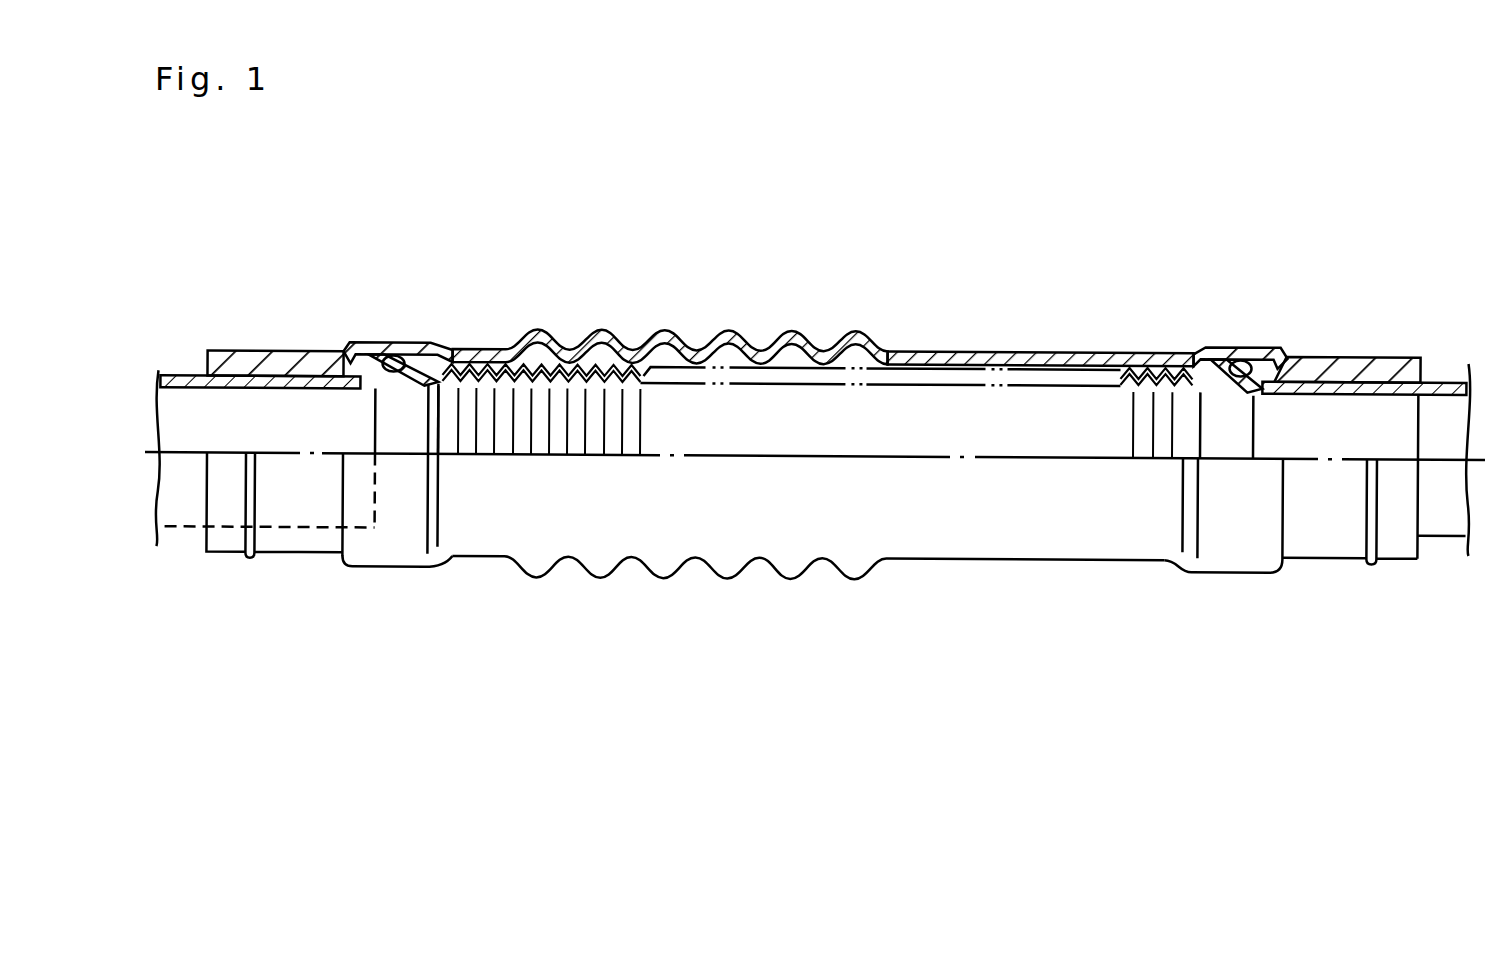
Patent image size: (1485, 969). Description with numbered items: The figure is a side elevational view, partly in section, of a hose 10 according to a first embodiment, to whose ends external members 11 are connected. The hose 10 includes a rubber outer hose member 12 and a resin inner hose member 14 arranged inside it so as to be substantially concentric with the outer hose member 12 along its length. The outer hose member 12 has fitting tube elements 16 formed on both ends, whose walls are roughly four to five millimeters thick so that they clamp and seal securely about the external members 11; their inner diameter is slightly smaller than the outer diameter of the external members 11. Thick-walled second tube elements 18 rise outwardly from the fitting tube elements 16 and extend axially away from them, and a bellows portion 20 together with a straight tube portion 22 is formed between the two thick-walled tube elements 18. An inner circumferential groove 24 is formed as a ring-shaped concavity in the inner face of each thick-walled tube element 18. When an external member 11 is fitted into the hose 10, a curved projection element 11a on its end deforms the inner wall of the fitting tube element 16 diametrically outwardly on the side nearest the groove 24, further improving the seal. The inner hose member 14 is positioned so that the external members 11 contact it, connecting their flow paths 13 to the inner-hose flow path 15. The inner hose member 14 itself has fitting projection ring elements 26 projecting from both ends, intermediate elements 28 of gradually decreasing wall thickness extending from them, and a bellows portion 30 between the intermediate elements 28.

The hose 10 is at (951, 242).
The external member 11 is at (182, 372).
The curved projection element 11a is at (358, 372).
The outer hose member 12 is at (822, 422).
The flow path 13 is at (296, 427).
The inner hose member 14 is at (433, 384).
The inner-hose flow path 15 is at (705, 432).
The fitting tube element 16 is at (303, 360).
The second tube element 18 is at (403, 342).
The bellows portion 20 is at (728, 331).
The straight tube portion 22 is at (1070, 350).
The inner circumferential groove 24 is at (393, 362).
The fitting projection ring element 26 is at (400, 385).
The intermediate element 28 is at (448, 400).
The bellows portion 30 is at (615, 392).